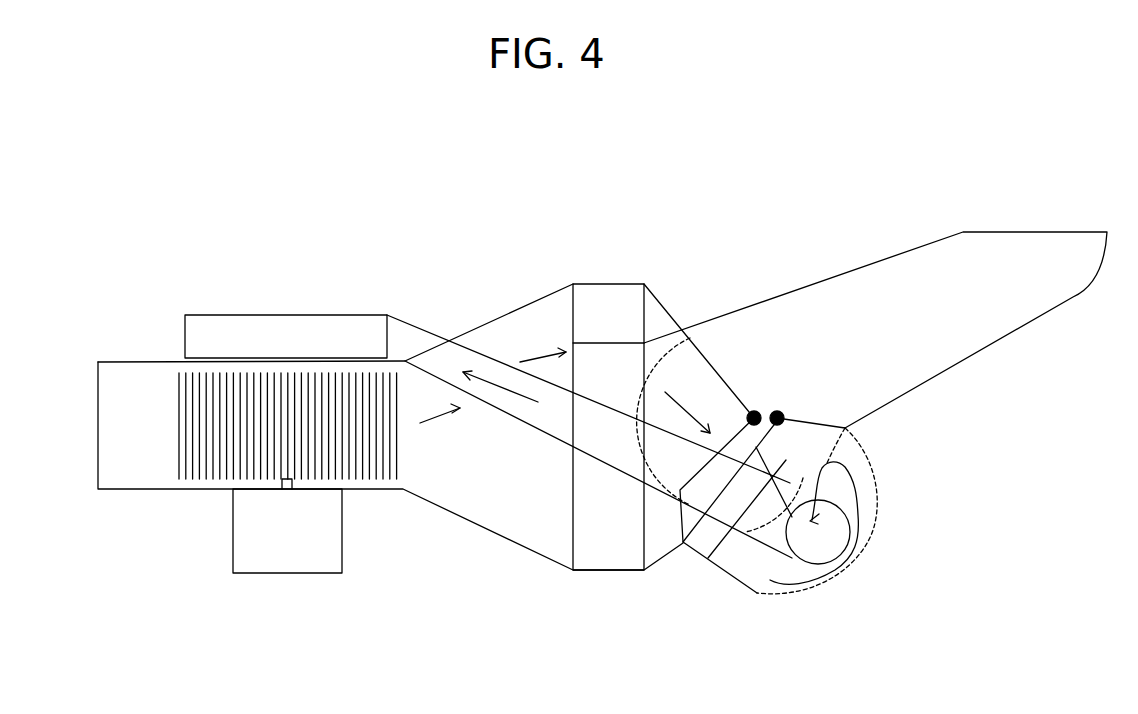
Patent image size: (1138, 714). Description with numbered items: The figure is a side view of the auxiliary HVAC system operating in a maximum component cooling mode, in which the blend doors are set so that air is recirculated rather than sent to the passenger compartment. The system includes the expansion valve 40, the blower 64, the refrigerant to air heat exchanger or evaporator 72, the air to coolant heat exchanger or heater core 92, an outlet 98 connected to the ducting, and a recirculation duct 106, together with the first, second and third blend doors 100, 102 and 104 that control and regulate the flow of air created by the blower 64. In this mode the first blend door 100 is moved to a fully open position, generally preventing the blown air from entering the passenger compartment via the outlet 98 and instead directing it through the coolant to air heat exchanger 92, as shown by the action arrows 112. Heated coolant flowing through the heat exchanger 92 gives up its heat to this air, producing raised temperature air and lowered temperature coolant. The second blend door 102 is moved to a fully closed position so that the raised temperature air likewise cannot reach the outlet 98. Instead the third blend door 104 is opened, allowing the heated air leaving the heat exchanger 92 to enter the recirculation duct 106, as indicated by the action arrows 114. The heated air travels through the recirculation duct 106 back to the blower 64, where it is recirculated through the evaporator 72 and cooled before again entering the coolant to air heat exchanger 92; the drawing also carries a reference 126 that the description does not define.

The expansion valve 40 is at (597, 284).
The blower 64 is at (233, 535).
The evaporator 72 is at (573, 508).
The heater core 92 is at (748, 585).
The outlet 98 is at (1013, 232).
The first blend door 100 is at (730, 383).
The second blend door 102 is at (811, 421).
The third blend door 104 is at (710, 557).
The recirculation duct 106 is at (293, 313).
The action arrows 112 is at (541, 357).
The action arrows 114 is at (858, 474).
The return airflow 126 is at (502, 388).